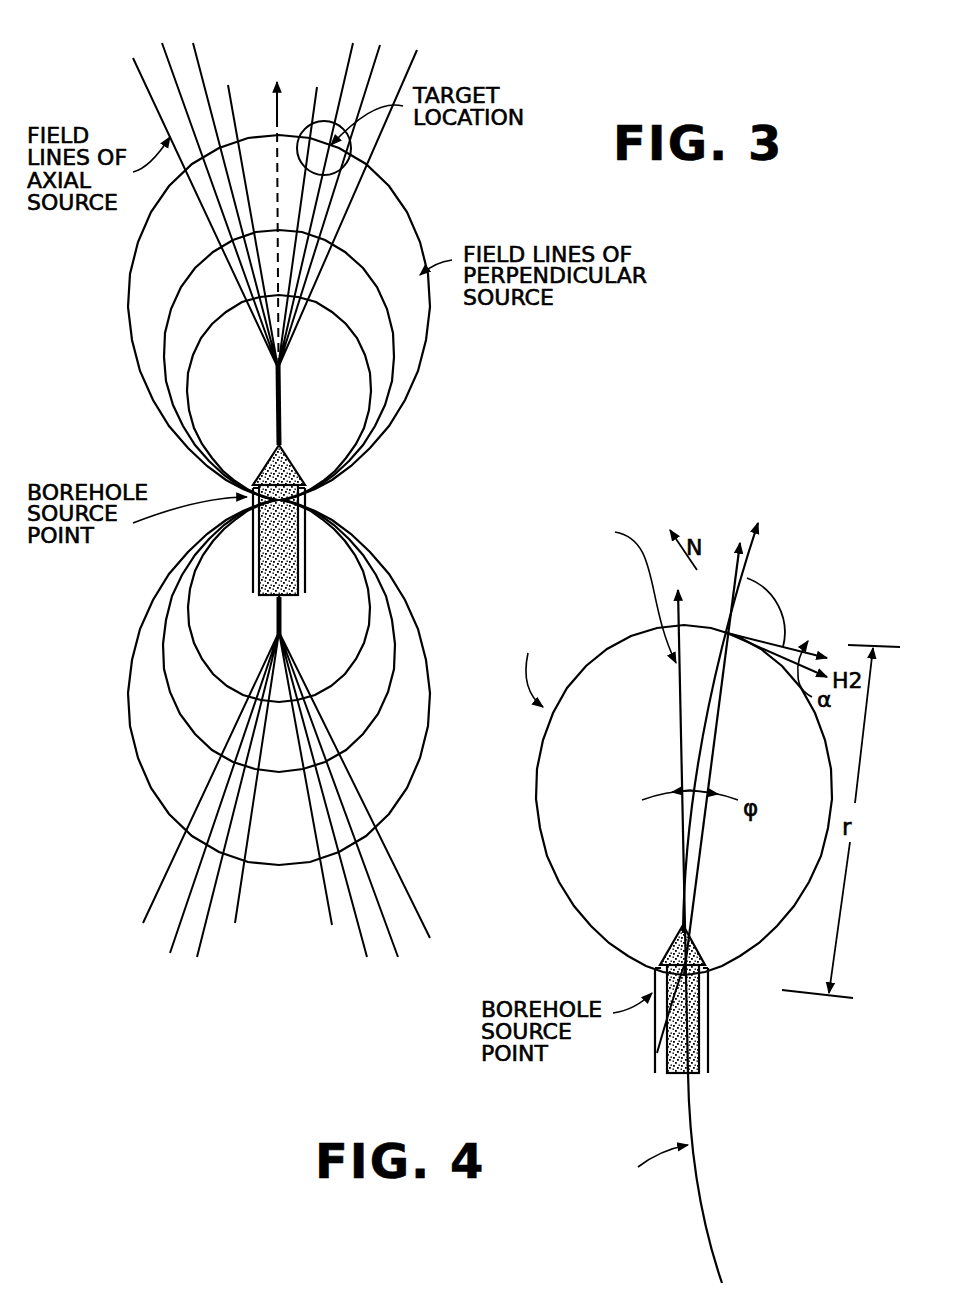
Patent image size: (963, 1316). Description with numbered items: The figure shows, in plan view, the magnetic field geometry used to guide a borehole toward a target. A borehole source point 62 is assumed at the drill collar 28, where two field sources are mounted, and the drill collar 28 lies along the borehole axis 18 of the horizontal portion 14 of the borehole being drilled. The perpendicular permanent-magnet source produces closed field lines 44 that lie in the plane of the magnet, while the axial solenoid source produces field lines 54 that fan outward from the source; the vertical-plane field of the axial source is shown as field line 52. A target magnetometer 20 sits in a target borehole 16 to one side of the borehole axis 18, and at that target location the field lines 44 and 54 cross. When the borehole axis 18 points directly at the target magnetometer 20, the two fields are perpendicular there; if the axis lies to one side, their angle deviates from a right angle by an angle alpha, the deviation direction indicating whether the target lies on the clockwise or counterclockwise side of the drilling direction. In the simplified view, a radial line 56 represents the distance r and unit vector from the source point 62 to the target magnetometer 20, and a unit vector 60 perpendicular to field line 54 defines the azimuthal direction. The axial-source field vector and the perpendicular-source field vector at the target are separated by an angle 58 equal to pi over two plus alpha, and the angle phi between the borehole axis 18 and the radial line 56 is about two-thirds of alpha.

In FIG. 4, the horizontal portion of the borehole 14 is at (710, 1022).
In FIG. 3, the target borehole 16 is at (353, 152).
In FIG. 3, the borehole axis 18 is at (281, 118).
In FIG. 4, the borehole axis 18 is at (679, 690).
In FIG. 4, the target magnetometer 20 is at (730, 638).
In FIG. 4, the collar 28 is at (700, 1047).
In FIG. 3, the field lines of perpendicular source 44 is at (190, 403).
In FIG. 4, the field lines of perpendicular source 44 is at (568, 911).
In FIG. 4, the field line of axial source 52 is at (713, 1237).
In FIG. 3, the field lines of axial source 54 is at (203, 78).
In FIG. 4, the field lines of axial source 54 is at (703, 738).
In FIG. 4, the radial line 56 is at (712, 775).
In FIG. 4, the angle between field vectors 58 is at (760, 578).
In FIG. 4, the unit vector perpendicular to field line 60 is at (762, 646).
In FIG. 4, the source point 62 is at (657, 1053).